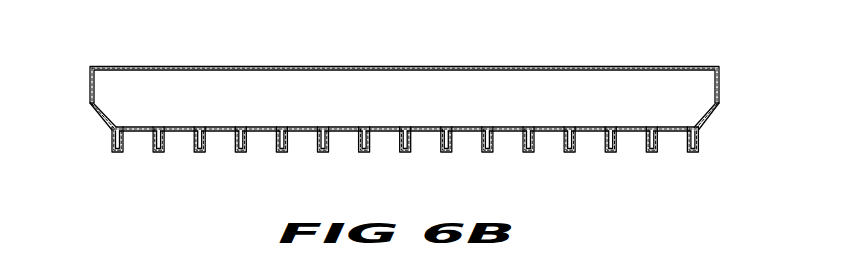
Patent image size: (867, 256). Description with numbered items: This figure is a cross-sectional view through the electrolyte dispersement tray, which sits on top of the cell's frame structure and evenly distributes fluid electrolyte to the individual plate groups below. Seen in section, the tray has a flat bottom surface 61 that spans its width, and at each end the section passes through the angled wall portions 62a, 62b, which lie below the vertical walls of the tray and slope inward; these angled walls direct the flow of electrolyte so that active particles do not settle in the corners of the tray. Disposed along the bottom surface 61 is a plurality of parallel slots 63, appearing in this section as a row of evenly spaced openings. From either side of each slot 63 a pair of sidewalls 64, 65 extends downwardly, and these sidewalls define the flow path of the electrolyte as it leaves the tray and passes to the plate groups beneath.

The bottom surface 61 is at (317, 102).
The angled wall portion 62a is at (105, 123).
The angled wall portion 62b is at (700, 129).
The slot 63 is at (525, 153).
The sidewall 64 is at (110, 152).
The sidewall 65 is at (123, 152).